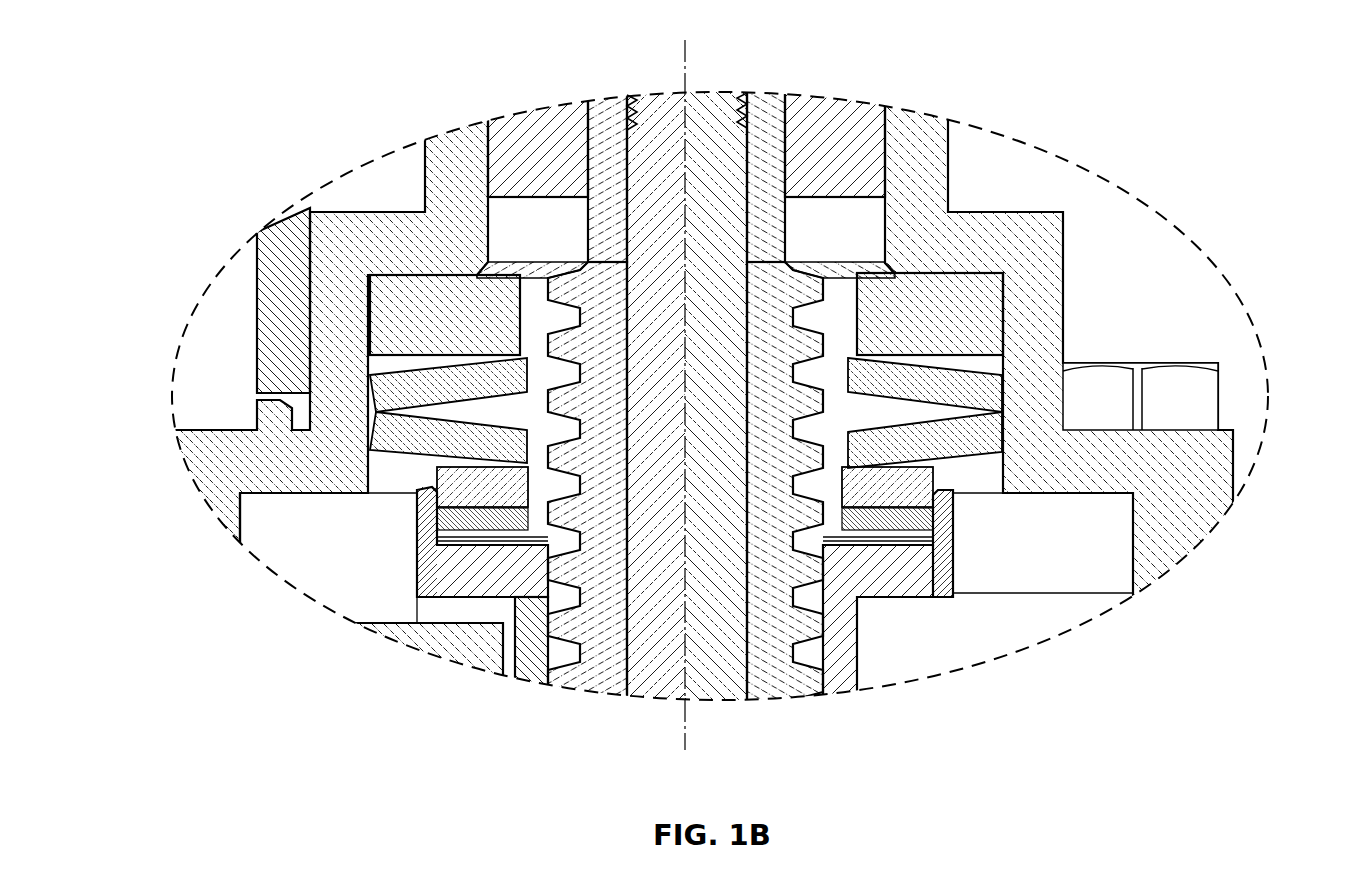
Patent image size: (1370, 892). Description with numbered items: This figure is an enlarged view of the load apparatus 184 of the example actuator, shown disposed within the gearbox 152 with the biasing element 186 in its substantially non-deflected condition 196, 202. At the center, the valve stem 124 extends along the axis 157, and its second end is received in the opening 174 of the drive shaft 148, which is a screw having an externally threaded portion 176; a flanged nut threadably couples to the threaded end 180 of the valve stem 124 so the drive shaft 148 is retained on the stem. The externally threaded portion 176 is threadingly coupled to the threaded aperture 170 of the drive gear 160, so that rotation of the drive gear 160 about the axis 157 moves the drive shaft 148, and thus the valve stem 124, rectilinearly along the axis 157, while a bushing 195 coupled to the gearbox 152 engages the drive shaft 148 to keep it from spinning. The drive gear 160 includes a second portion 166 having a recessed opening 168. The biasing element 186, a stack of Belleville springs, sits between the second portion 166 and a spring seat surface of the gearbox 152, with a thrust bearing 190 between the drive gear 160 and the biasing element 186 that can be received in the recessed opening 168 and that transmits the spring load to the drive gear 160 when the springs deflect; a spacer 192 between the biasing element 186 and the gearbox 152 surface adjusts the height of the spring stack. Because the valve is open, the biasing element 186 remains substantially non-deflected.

The valve stem 124 is at (657, 672).
The drive shaft 148 is at (778, 232).
The gearbox 152 is at (200, 430).
The axis 157 is at (685, 70).
The drive gear 160 is at (859, 633).
The second portion 166 is at (413, 540).
The recessed opening 168 is at (893, 547).
The threaded aperture 170 is at (793, 660).
The opening 174 is at (635, 215).
The externally threaded portion 176 is at (547, 347).
The threaded end 180 is at (628, 108).
The load apparatus 184 is at (1090, 255).
The biasing element 186 is at (977, 397).
The thrust bearing 190 is at (910, 493).
The spacer 192 is at (382, 290).
The bushing 195 is at (862, 150).
The substantially non-deflected condition 196 is at (739, 396).
The substantially non-deflected condition 202 is at (1133, 153).